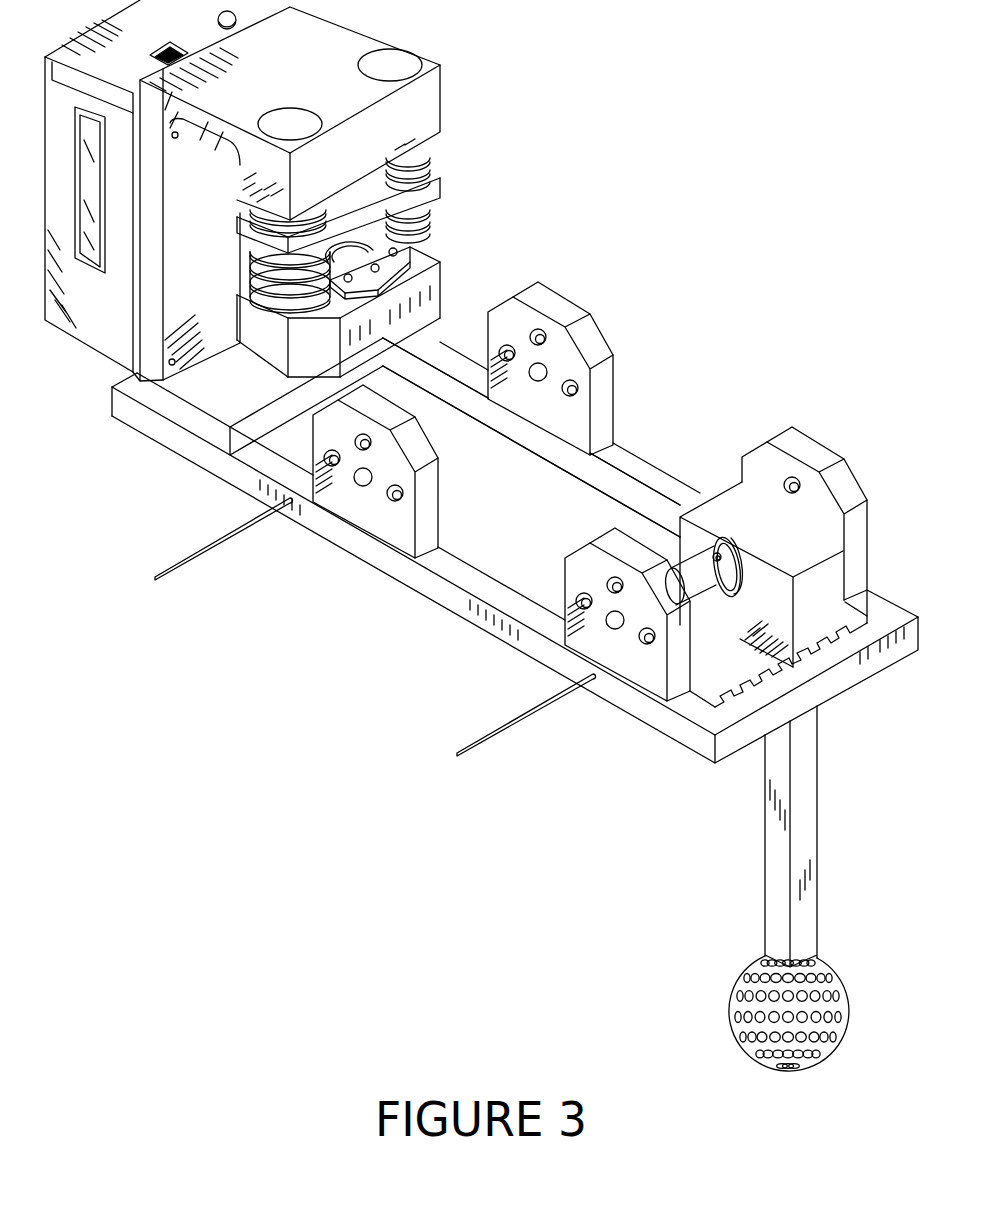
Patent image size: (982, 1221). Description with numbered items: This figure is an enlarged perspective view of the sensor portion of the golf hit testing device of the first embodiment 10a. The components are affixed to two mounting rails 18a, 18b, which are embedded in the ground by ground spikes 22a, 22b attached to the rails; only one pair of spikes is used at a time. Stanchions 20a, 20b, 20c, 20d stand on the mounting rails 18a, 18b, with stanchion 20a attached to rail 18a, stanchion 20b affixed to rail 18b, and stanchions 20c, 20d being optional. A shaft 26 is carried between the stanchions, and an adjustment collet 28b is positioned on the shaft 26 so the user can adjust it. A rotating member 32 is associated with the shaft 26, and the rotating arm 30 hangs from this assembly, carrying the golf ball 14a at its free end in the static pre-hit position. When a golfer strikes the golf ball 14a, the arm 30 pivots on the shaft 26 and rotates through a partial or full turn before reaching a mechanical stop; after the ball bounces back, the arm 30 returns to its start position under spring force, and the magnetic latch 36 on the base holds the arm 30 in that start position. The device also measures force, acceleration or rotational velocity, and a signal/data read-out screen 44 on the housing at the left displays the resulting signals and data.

The first embodiment of present invention 10a is at (760, 96).
The golf ball in static pre-hit position 14a is at (730, 1000).
The mounting rail 18a is at (634, 455).
The mounting rail 18b is at (465, 618).
The stanchion on mounting rail 20a is at (636, 668).
The stanchion on mounting rail 20b is at (843, 484).
The stanchion on mounting rail 20c is at (566, 298).
The stanchion on mounting rail 20d is at (388, 520).
The ground spike attached to mounting rail 22a is at (232, 537).
The ground spike attached to mounting rail 22b is at (507, 730).
The shaft 26 is at (693, 572).
The adjustment collet on shaft 28b is at (723, 598).
The rotating arm 30 is at (802, 845).
The rotating member 32 is at (820, 598).
The magnetic latch to maintain golf ball pre-hit position 36 is at (803, 655).
The signal/data read-out screen 44 is at (92, 192).